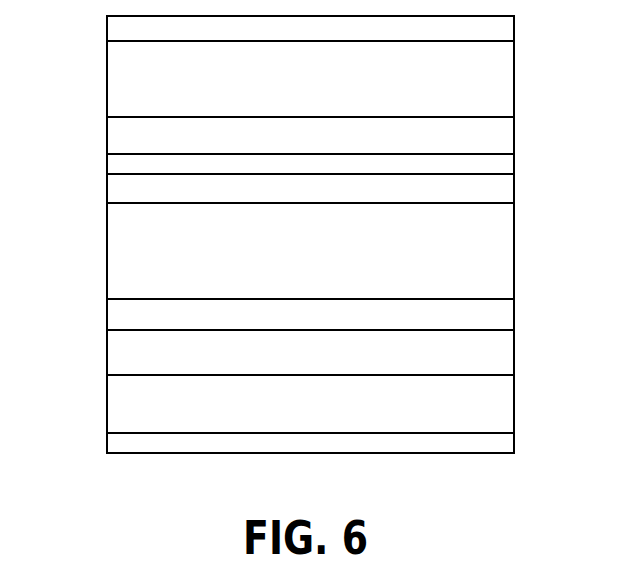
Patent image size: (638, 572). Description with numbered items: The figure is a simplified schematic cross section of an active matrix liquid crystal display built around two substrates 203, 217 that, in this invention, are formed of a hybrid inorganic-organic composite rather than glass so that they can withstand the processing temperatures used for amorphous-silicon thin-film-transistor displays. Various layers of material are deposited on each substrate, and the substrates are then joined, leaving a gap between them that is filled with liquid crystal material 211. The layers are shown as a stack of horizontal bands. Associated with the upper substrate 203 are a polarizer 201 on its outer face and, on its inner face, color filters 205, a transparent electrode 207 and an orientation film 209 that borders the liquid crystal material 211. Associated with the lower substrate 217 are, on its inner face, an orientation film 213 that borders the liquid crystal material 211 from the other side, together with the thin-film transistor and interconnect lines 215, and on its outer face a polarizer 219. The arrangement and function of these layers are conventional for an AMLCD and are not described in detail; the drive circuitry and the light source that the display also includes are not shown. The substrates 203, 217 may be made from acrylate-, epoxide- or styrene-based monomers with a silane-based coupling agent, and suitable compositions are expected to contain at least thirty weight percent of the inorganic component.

The polarizer 201 is at (106, 31).
The substrate 203 is at (516, 73).
The color filters 205 is at (106, 138).
The transparent electrode 207 is at (516, 163).
The orientation film 209 is at (106, 193).
The liquid crystal material 211 is at (516, 248).
The orientation film 213 is at (106, 318).
The thin-film transistor and interconnect lines 215 is at (516, 354).
The substrate 217 is at (106, 406).
The polarizer 219 is at (516, 445).